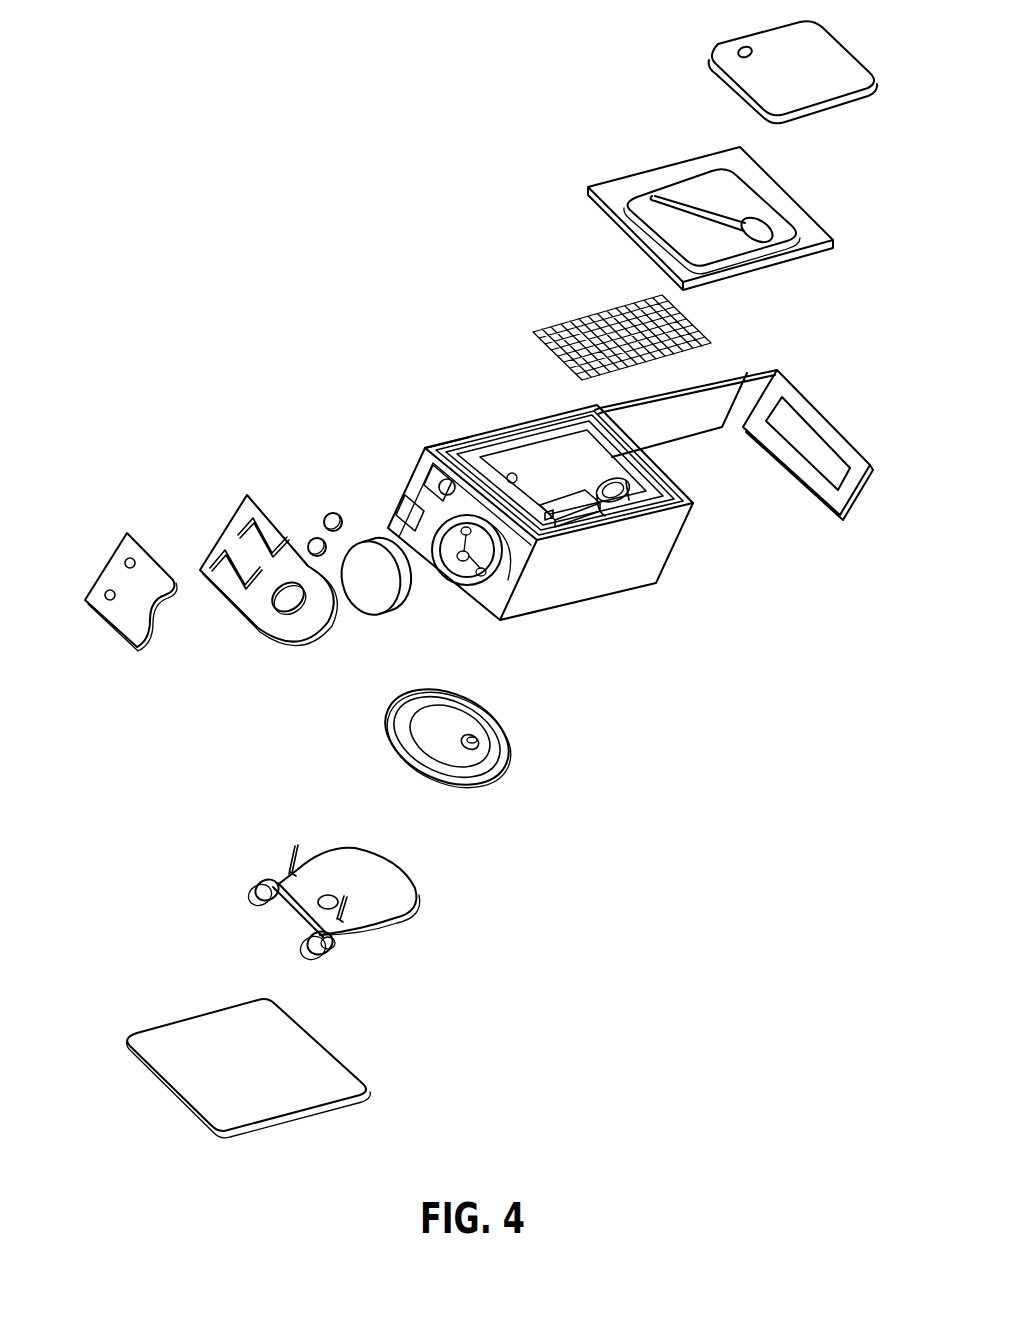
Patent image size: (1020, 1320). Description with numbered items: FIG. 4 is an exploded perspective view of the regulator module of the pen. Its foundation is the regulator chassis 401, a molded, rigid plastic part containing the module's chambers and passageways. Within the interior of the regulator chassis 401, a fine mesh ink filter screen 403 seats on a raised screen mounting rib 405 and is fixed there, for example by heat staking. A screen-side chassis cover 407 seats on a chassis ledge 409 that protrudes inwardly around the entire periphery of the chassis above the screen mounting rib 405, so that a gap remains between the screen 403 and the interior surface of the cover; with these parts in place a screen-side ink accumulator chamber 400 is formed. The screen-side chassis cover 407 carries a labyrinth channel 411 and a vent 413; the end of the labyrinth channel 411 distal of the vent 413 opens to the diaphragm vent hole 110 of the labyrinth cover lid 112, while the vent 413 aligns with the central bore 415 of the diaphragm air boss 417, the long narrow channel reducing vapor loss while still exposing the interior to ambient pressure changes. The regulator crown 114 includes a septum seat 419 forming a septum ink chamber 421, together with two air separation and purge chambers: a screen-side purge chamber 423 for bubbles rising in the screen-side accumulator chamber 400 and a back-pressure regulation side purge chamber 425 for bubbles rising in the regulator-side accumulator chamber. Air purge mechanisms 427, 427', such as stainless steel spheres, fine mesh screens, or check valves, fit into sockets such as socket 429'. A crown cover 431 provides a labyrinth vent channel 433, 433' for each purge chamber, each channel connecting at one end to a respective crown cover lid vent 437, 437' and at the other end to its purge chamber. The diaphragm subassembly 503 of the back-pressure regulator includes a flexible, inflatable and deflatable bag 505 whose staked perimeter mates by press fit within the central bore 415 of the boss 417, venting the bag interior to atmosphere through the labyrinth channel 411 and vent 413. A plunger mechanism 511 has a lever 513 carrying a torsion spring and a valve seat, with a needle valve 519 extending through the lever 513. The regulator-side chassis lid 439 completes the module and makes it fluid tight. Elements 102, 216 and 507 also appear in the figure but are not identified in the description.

The lid 102 is at (832, 422).
The diaphragm vent hole 110 is at (745, 46).
The labyrinth cover lid 112 is at (760, 88).
The regulator crown 114 is at (440, 450).
The lens 216 is at (377, 600).
The screen-side ink accumulator chamber 400 is at (582, 508).
The regulator chassis 401 is at (578, 614).
The ink filter screen 403 is at (566, 322).
The screen mounting rib 405 is at (650, 466).
The screen-side chassis cover 407 is at (778, 182).
The chassis ledge 409 is at (655, 476).
The labyrinth channel 411 is at (655, 196).
The vent 413 is at (762, 232).
The central bore 415 is at (670, 508).
The diaphragm air boss 417 is at (610, 495).
The septum seat 419 is at (455, 566).
The septum ink chamber 421 is at (477, 590).
The screen-side air separation and purge chamber 423 is at (430, 478).
The back-pressure regulation side air separation and purge chamber 425 is at (410, 515).
The air purge mechanism 427 is at (294, 516).
The air purge mechanism 427' is at (320, 489).
The socket 429' is at (481, 444).
The crown cover 431 is at (268, 647).
The labyrinth vent channel 433 is at (207, 554).
The labyrinth vent channel 433' is at (233, 518).
The crown cover lid vent 437 is at (112, 592).
The crown cover lid vent 437' is at (104, 538).
The regulator-side chassis lid 439 is at (315, 1077).
The diaphragm subassembly 503 is at (527, 742).
The inflatable and deflatable bag 505 is at (447, 711).
The disc hole 507 is at (490, 760).
The plunger mechanism 511 is at (415, 923).
The lever 513 is at (378, 878).
The needle valve 519 is at (330, 897).